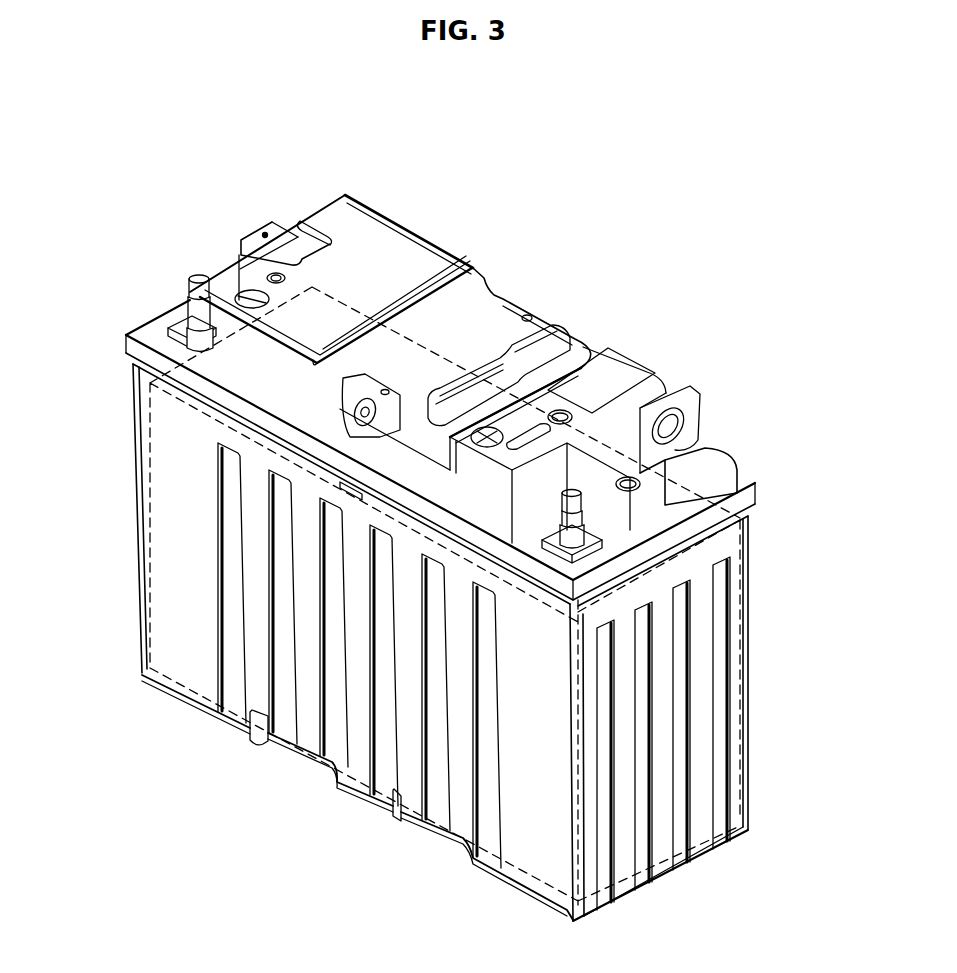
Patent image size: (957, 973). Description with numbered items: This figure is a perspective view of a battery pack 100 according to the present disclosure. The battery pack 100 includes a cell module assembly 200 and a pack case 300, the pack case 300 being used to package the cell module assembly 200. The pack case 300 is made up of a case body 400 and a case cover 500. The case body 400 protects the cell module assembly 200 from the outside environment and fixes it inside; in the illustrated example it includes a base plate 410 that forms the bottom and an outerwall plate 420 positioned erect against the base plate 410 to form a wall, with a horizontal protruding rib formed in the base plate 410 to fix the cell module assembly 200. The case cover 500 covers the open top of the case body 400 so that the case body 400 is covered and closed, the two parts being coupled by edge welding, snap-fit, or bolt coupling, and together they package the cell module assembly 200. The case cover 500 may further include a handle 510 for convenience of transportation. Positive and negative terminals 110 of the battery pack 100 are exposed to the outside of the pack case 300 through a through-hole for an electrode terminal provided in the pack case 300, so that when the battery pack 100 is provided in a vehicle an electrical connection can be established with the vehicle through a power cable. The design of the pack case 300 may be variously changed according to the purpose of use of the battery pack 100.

The battery pack 100 is at (262, 150).
The positive and negative terminals 110 is at (198, 277).
The cell module assembly 200 is at (149, 549).
The pack case 300 is at (362, 812).
The case body 400 is at (802, 678).
The base plate 410 is at (720, 845).
The outerwall plate 420 is at (720, 688).
The case cover 500 is at (496, 275).
The handle 510 is at (575, 350).